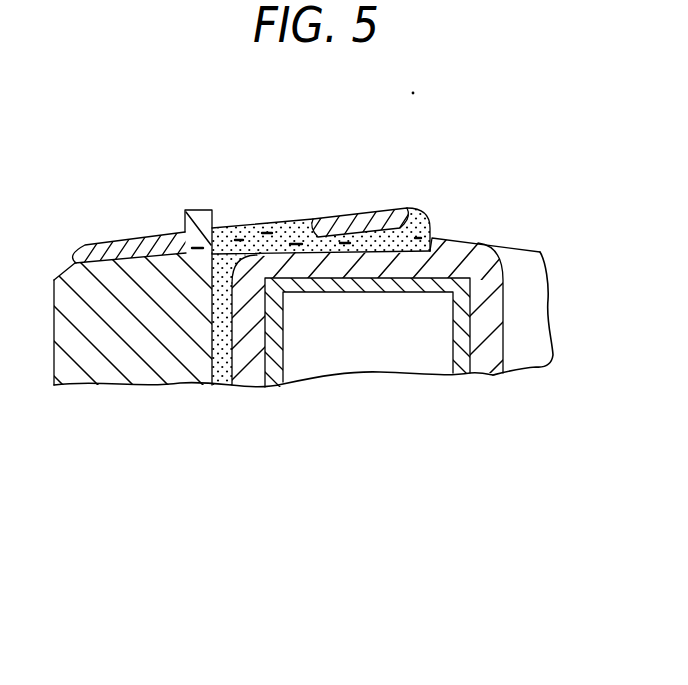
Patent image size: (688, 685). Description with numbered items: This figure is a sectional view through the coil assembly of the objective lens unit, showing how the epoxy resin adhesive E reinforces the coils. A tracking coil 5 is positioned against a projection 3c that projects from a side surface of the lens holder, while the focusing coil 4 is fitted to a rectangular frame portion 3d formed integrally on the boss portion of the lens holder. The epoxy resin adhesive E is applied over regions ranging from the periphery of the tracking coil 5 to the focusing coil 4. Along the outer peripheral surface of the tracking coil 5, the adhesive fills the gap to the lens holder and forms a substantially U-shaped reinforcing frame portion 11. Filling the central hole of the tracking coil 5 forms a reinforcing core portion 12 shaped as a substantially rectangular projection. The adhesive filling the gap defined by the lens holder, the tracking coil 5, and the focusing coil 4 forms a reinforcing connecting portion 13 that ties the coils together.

The reinforcing frame portion 11 is at (84, 251).
The tracking coil 5 is at (125, 240).
The projection 3c is at (194, 212).
The reinforcing core portion 12 is at (267, 228).
The reinforcing connecting portion 13 is at (220, 387).
The rectangular frame portion 3d is at (463, 374).
The focusing coil 4 is at (492, 313).
The epoxy resin adhesive E is at (446, 196).